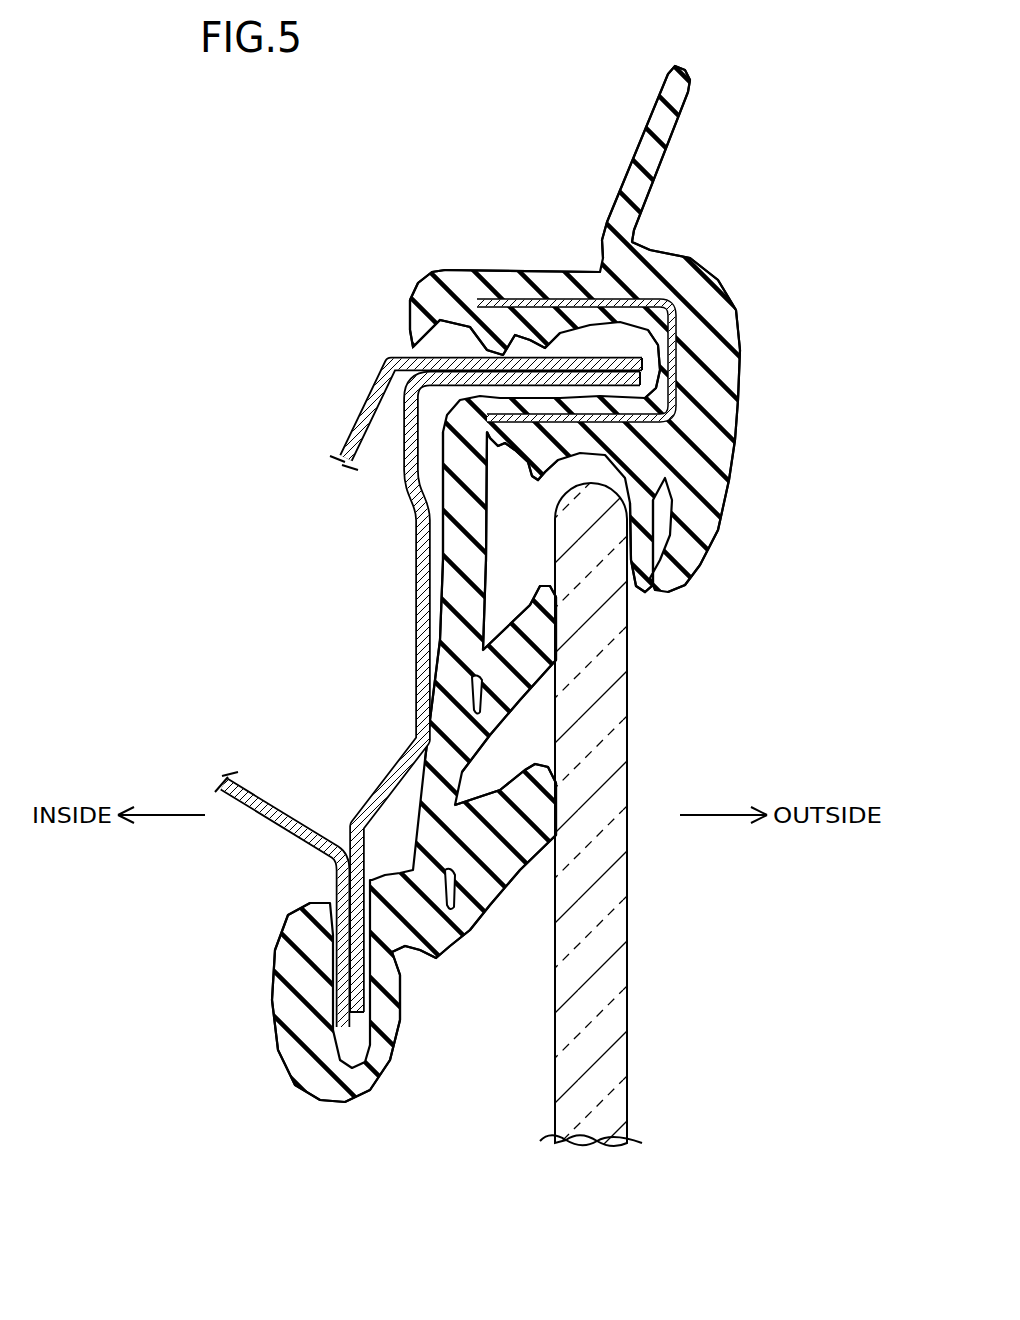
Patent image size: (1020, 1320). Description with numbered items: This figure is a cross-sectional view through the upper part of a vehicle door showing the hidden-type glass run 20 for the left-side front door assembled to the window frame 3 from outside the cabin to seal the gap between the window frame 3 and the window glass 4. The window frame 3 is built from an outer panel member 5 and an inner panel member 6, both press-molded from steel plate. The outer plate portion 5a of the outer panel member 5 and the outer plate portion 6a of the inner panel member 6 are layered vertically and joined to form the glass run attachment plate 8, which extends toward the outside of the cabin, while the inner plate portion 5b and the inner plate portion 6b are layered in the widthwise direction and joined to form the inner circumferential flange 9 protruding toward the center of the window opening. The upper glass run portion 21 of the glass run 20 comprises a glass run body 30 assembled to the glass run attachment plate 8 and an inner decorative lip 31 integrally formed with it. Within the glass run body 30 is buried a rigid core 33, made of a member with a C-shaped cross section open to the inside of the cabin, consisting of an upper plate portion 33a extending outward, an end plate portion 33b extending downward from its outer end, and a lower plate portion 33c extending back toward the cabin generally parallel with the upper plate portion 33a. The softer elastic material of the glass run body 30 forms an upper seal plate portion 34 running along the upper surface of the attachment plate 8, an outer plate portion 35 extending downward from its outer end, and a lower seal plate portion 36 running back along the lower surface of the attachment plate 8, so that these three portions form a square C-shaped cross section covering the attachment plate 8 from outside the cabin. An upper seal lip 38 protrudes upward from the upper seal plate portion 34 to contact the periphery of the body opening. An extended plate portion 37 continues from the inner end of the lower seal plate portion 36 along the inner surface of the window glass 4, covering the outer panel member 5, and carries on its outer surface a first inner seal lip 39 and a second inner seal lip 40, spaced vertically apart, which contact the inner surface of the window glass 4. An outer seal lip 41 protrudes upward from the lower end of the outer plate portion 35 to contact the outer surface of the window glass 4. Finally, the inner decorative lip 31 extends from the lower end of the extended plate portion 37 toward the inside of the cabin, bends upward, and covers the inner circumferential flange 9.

The window frame 3 is at (423, 596).
The window glass 4 is at (631, 1013).
The outer panel member 5 is at (413, 632).
The outer plate portion 5a is at (640, 418).
The inner plate portion 5b is at (365, 955).
The inner panel member 6 is at (347, 440).
The outer plate portion 6a is at (590, 368).
The inner plate portion 6b is at (335, 980).
The glass run attachment plate 8 is at (522, 350).
The inner circumferential flange 9 is at (372, 924).
The glass run 20 is at (797, 251).
The upper glass run portion 21 is at (713, 276).
The glass run body 30 is at (725, 410).
The inner decorative lip 31 is at (328, 1090).
The core 33 is at (648, 280).
The upper plate portion 33a is at (556, 292).
The end plate portion 33b is at (680, 353).
The lower plate portion 33c is at (655, 455).
The upper seal plate portion 34 is at (490, 273).
The outer plate portion 35 is at (740, 390).
The lower seal plate portion 36 is at (535, 458).
The extended plate portion 37 is at (447, 577).
The upper seal lip 38 is at (637, 138).
The first inner seal lip 39 is at (510, 663).
The second inner seal lip 40 is at (513, 860).
The outer seal lip 41 is at (644, 596).